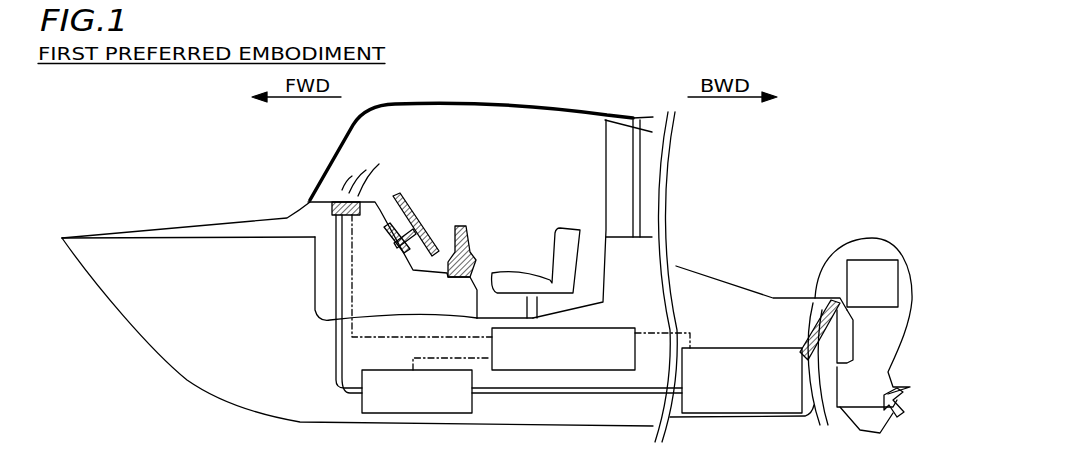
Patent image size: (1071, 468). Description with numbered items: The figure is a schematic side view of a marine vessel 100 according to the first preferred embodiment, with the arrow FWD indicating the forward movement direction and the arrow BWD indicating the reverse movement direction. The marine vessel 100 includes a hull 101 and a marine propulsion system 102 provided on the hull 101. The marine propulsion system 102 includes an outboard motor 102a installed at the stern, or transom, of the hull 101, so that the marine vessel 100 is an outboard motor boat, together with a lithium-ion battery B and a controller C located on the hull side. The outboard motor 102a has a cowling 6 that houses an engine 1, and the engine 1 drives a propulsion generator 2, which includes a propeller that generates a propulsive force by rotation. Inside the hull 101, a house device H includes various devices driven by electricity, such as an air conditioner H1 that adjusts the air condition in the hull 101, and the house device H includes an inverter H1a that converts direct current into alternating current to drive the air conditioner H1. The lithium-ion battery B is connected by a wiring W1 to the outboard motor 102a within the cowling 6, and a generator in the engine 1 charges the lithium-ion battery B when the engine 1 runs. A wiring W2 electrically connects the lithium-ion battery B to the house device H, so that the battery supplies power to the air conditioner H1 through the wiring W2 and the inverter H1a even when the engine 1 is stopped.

The marine vessel 100 is at (159, 166).
The hull 101 is at (104, 243).
The marine propulsion system 102 is at (773, 215).
The outboard motor 102a is at (827, 235).
The cowling 6 is at (868, 242).
The engine 1 is at (887, 262).
The propulsion generator 2 is at (887, 418).
The house device H is at (318, 198).
The air conditioner H1 is at (320, 200).
The inverter H1a is at (381, 415).
The controller C is at (621, 328).
The lithium-ion battery B is at (720, 417).
The wiring W1 is at (815, 394).
The wiring W2 is at (567, 399).